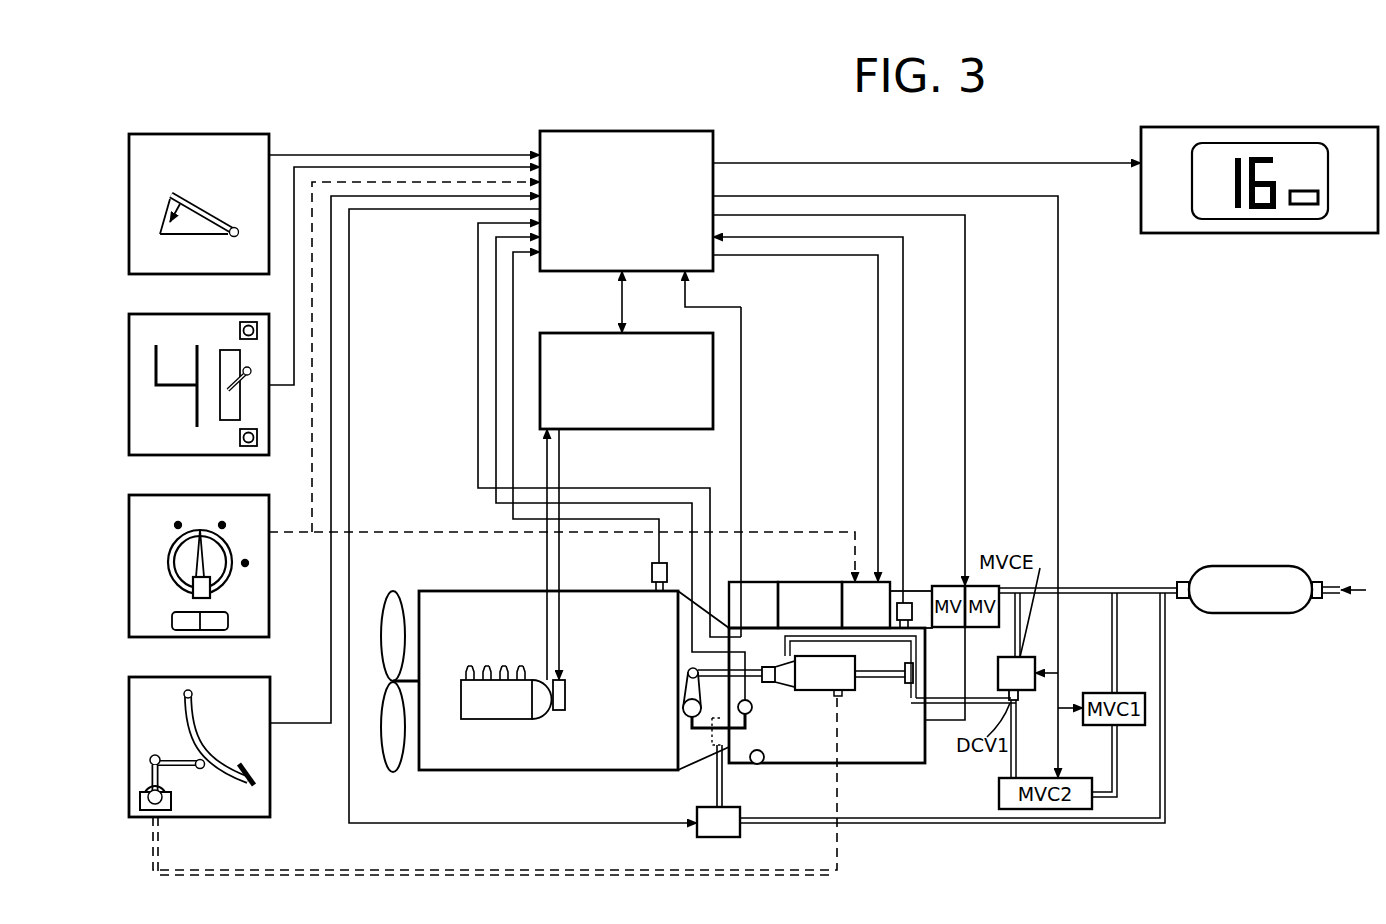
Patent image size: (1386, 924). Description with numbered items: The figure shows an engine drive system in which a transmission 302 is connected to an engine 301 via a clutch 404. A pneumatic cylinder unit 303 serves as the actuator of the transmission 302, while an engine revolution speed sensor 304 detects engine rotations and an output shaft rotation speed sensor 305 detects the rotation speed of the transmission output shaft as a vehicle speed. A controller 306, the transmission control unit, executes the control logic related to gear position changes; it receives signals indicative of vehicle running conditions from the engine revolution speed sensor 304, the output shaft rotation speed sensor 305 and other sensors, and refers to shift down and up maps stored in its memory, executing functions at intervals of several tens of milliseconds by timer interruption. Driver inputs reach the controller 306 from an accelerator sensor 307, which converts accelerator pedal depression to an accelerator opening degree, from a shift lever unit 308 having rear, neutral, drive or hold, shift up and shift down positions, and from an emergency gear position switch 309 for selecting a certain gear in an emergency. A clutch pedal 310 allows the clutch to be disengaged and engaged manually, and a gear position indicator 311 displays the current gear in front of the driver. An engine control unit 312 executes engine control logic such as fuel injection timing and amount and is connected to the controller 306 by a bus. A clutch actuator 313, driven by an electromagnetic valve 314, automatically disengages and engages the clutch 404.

The engine 301 is at (500, 591).
The transmission 302 is at (862, 757).
The pneumatic cylinder unit 303 is at (848, 580).
The engine revolution speed sensor 304 is at (652, 576).
The output shaft rotation speed sensor 305 is at (912, 608).
The controller (transmission control unit, TMCU) 306 is at (654, 131).
The accelerator sensor 307 is at (129, 218).
The shift lever unit 308 is at (129, 402).
The emergency gear position switch 309 is at (129, 580).
The clutch pedal 310 is at (129, 742).
The gear position indicator 311 is at (1277, 127).
The engine control unit (ECU) 312 is at (584, 333).
The clutch actuator 313 is at (822, 690).
The electromagnetic valve (MV) 314 is at (741, 833).
The clutch 404 is at (715, 762).